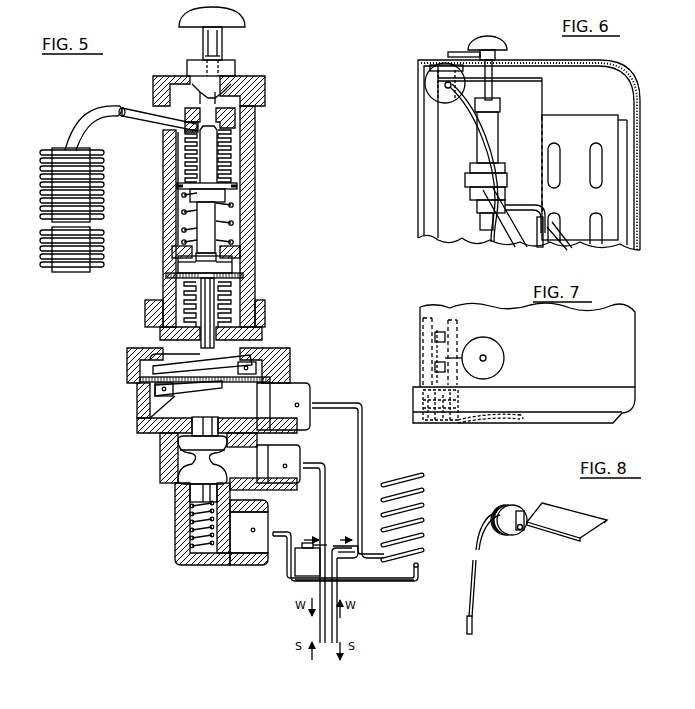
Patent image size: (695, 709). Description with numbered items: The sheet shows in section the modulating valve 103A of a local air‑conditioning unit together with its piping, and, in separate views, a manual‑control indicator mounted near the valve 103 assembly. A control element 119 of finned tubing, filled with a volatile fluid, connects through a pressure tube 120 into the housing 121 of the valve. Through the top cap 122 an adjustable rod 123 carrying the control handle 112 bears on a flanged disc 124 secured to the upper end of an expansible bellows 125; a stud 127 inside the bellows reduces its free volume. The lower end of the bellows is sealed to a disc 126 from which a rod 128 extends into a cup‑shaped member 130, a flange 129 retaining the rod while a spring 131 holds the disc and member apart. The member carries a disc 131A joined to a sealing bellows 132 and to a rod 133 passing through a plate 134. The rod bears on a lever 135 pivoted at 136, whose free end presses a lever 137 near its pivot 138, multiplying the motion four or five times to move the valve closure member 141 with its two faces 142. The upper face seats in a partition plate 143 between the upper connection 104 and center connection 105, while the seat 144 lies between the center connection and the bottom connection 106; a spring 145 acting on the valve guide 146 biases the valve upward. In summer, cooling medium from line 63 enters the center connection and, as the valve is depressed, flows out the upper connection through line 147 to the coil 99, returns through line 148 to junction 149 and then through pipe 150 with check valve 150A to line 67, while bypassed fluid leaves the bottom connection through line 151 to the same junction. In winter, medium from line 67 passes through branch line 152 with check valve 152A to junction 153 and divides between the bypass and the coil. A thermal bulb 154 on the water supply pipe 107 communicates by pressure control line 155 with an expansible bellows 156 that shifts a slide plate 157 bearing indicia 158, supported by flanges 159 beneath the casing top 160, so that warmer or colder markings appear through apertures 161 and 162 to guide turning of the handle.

In FIG. 5, the control handle 112 is at (225, 18).
In FIG. 6, the control handle 112 is at (484, 42).
In FIG. 7, the control handle 112 is at (505, 358).
In FIG. 5, the adjustable rod 123 is at (213, 99).
In FIG. 5, the top cap 122 is at (260, 100).
In FIG. 5, the flanged disc 124 is at (230, 116).
In FIG. 5, the expansible bellows 125 is at (232, 142).
In FIG. 5, the housing 121 is at (256, 155).
In FIG. 5, the stud 127 is at (213, 172).
In FIG. 5, the disc 126 is at (235, 185).
In FIG. 5, the rod 128 is at (208, 217).
In FIG. 5, the valve 103A is at (256, 233).
In FIG. 5, the spring 131 is at (232, 243).
In FIG. 5, the cup-shaped member 130 is at (225, 258).
In FIG. 5, the flange 129 is at (228, 268).
In FIG. 5, the disc 131A is at (252, 297).
In FIG. 5, the sealing bellows 132 is at (228, 303).
In FIG. 5, the rod 133 is at (203, 292).
In FIG. 5, the plate 134 is at (263, 334).
In FIG. 5, the pressure tube 120 is at (93, 106).
In FIG. 5, the control element 119 is at (105, 160).
In FIG. 5, the lever 135 is at (192, 363).
In FIG. 5, the pivot 136 is at (258, 370).
In FIG. 5, the pivot 138 is at (158, 390).
In FIG. 5, the lever 137 is at (183, 391).
In FIG. 5, the partition plate 143 is at (160, 436).
In FIG. 5, the upper connection 104 is at (298, 394).
In FIG. 5, the center connection 105 is at (288, 450).
In FIG. 5, the valve closure member 141 is at (200, 462).
In FIG. 5, the faces 142 is at (198, 441).
In FIG. 5, the seat 144 is at (198, 490).
In FIG. 5, the bore wall 146 is at (200, 502).
In FIG. 5, the spring 145 is at (185, 512).
In FIG. 5, the bottom connection 106 is at (253, 521).
In FIG. 5, the line 147 is at (362, 440).
In FIG. 5, the line 63 is at (321, 622).
In FIG. 5, the line 67 is at (337, 625).
In FIG. 5, the branch line 152 is at (343, 555).
In FIG. 5, the check valve 152A is at (341, 529).
In FIG. 5, the junction 153 is at (350, 532).
In FIG. 5, the pipe 150 is at (304, 532).
In FIG. 5, the check valve 150A is at (302, 556).
In FIG. 5, the junction 149 is at (288, 563).
In FIG. 5, the line 151 is at (286, 545).
In FIG. 5, the line 148 is at (402, 583).
In FIG. 5, the coil 99 is at (424, 492).
In FIG. 6, the coil 99 is at (596, 172).
In FIG. 6, the top 160 is at (430, 60).
In FIG. 6, the flanges 159 is at (432, 66).
In FIG. 7, the flanges 159 is at (418, 320).
In FIG. 6, the slide plate 157 is at (440, 70).
In FIG. 7, the slide plate 157 is at (440, 322).
In FIG. 8, the slide plate 157 is at (571, 505).
In FIG. 6, the expansible bellows 156 is at (432, 88).
In FIG. 7, the expansible bellows 156 is at (418, 400).
In FIG. 8, the expansible bellows 156 is at (502, 505).
In FIG. 6, the pressure control line 155 is at (467, 101).
In FIG. 7, the pressure control line 155 is at (490, 418).
In FIG. 8, the pressure control line 155 is at (475, 580).
In FIG. 6, the valve 103 is at (494, 126).
In FIG. 6, the water supply pipe 107 is at (524, 212).
In FIG. 6, the thermal bulb 154 is at (544, 222).
In FIG. 7, the thermal bulb 154 is at (523, 418).
In FIG. 8, the thermal bulb 154 is at (472, 620).
In FIG. 7, the aperture 162 is at (435, 337).
In FIG. 7, the aperture 161 is at (435, 367).
In FIG. 8, the indicia 158 is at (592, 516).